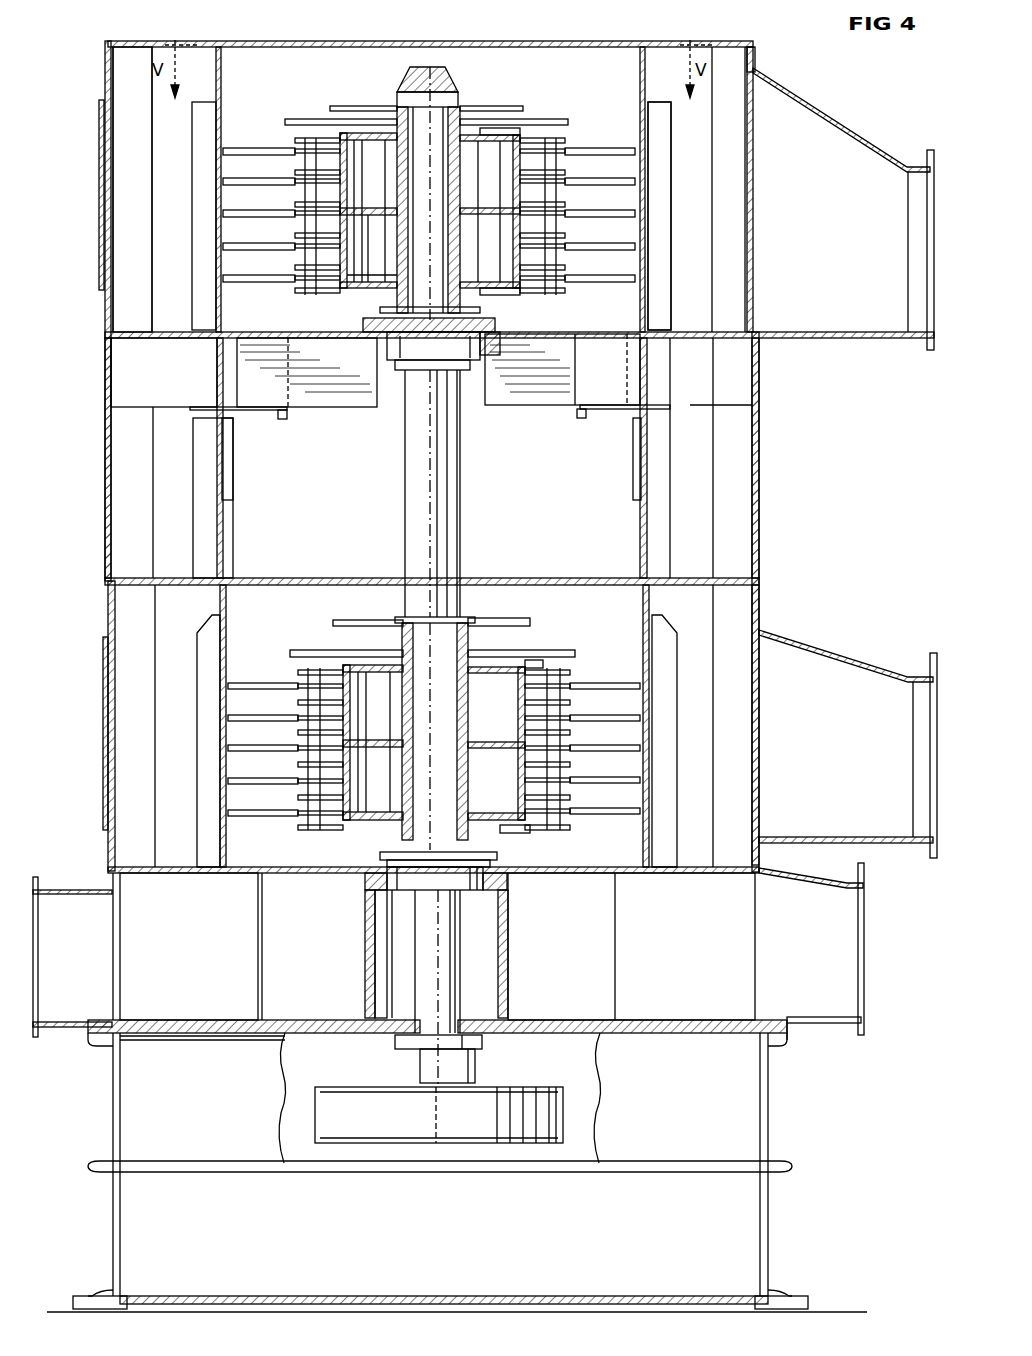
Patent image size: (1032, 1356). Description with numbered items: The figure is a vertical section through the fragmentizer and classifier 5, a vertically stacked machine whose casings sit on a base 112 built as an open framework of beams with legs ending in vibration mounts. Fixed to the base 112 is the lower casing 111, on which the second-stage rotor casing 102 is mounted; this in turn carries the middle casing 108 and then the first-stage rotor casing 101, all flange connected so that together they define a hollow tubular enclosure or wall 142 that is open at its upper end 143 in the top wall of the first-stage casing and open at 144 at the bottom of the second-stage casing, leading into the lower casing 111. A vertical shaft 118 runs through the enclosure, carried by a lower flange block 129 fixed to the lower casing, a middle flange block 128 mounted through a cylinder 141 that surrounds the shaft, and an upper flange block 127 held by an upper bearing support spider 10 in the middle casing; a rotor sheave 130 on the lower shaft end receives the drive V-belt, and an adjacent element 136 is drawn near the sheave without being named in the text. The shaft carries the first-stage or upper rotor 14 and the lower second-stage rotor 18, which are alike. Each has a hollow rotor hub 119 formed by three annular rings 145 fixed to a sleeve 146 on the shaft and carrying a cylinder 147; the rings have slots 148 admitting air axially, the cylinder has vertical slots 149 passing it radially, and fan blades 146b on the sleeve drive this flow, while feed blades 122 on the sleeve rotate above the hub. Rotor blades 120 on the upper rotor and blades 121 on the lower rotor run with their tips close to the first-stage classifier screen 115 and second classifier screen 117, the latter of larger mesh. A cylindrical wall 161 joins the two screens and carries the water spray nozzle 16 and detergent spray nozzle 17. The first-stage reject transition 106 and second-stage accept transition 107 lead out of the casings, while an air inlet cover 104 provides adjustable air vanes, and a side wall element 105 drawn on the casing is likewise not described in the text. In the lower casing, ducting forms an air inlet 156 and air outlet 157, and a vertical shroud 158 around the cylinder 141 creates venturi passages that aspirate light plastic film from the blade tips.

The fragmentizer and classifier 5 is at (780, 530).
The upper bearing support spider 10 is at (532, 409).
The first-stage or upper rotor 14 is at (478, 78).
The water spray nozzle 16 is at (290, 414).
The detergent spray nozzle 17 is at (582, 413).
The lower or second-stage rotor 18 is at (472, 610).
The rotor stage 1 casing 101 is at (758, 62).
The rotor stage 2 casing 102 is at (765, 622).
The air inlet cover 104 is at (103, 78).
The housing lining 105 is at (100, 262).
The stage 1 reject transition 106 is at (854, 132).
The stage 2 accept transition 107 is at (882, 658).
The middle casing 108 is at (762, 488).
The lower casing 111 is at (765, 868).
The base 112 is at (765, 1118).
The first-stage classifier screen 115 is at (638, 150).
The second classifier screen 117 is at (650, 760).
The shaft 118 is at (445, 985).
The first-stage rotor hub 119 is at (520, 140).
The first-stage rotor blades 120 is at (252, 178).
The rotor blades 121 is at (280, 684).
The feed blades 122 is at (305, 124).
The upper flange block 127 is at (403, 357).
The middle flange block 128 is at (643, 206).
The lower flange block 129 is at (480, 1040).
The rotor sheave 130 is at (380, 1086).
The pulley hub 136 is at (390, 1125).
The cylinder 141 is at (508, 996).
The hollow tubular enclosure or wall 142 is at (106, 488).
The open upper end 143 is at (409, 42).
The bottom opening 144 is at (230, 878).
The annular rings 145 is at (492, 231).
The sleeve 146 is at (385, 228).
The fan blades 146b is at (374, 258).
The cylinder 147 is at (335, 203).
The slots 148 is at (376, 151).
The vertical slots 149 is at (546, 160).
The air inlet 156 is at (95, 888).
The air outlet 157 is at (832, 1025).
The vertical shroud 158 is at (606, 969).
The cylindrical wall 161 is at (232, 462).